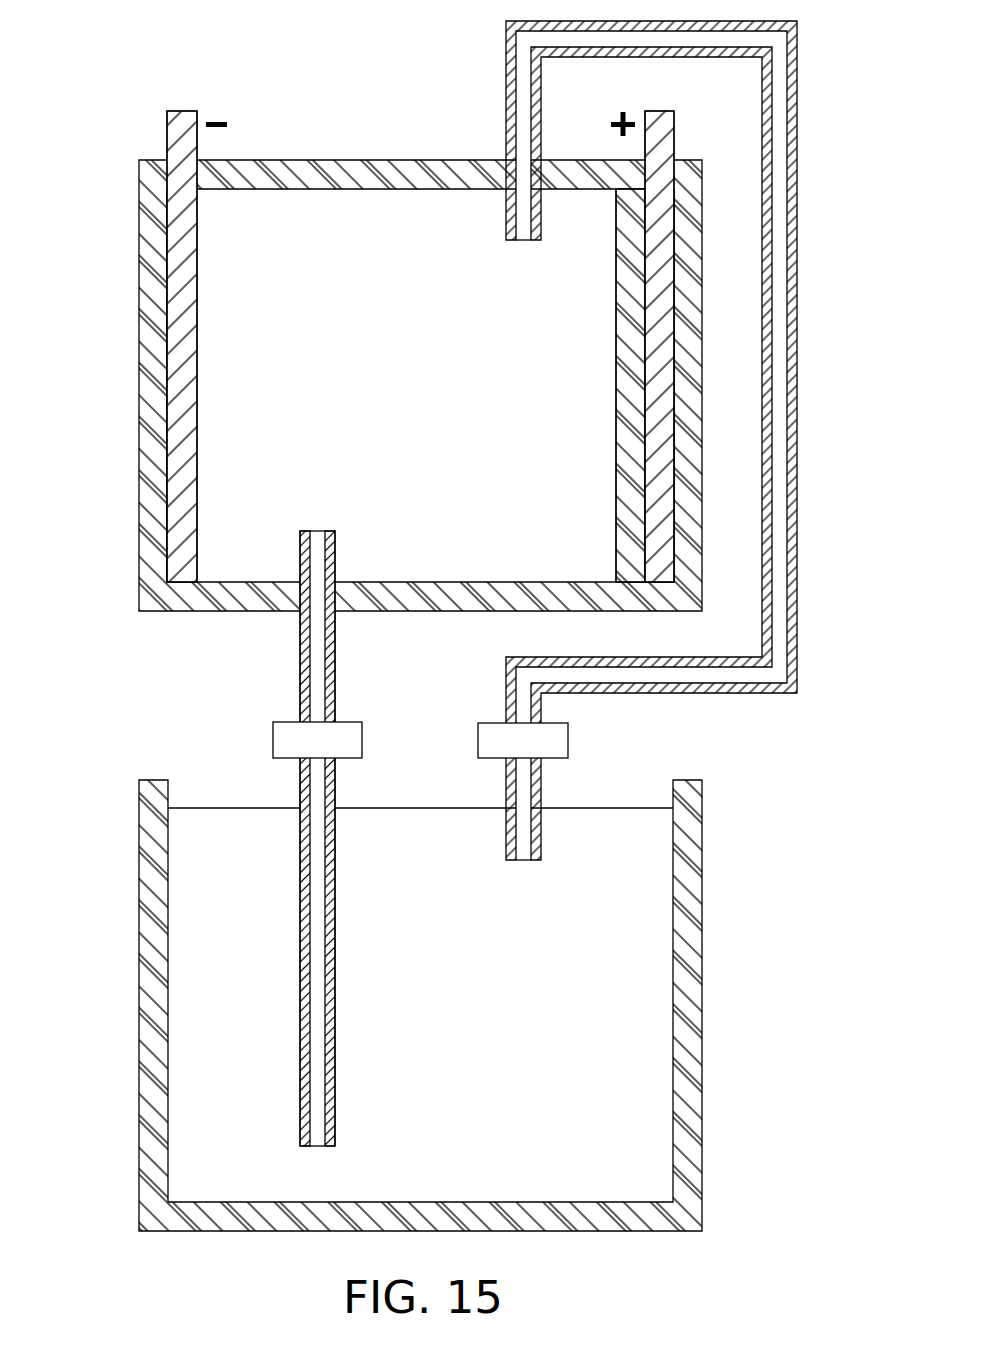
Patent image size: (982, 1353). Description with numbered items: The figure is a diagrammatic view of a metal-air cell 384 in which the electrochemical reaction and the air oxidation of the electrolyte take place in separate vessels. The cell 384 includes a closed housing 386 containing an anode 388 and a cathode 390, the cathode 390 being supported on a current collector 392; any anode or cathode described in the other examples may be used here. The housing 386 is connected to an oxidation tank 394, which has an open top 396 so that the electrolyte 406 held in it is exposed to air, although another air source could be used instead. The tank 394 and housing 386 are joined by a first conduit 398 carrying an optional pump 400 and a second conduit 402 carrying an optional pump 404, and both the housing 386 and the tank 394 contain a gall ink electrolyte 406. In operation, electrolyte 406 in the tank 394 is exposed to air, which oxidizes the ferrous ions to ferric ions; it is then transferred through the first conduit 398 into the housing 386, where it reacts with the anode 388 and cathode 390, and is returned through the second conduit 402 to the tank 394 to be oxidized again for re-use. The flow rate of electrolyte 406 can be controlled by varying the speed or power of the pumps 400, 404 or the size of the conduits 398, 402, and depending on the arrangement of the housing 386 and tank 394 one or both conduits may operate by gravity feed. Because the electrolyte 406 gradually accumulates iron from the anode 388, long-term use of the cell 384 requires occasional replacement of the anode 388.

The metal-air cell 384 is at (374, 324).
The housing 386 is at (150, 308).
The anode 388 is at (180, 272).
The cathode 390 is at (628, 493).
The current collector 392 is at (657, 526).
The oxidation tank 394 is at (702, 1012).
The open top 396 is at (451, 953).
The first conduit 398 is at (337, 656).
The pump 400 is at (362, 738).
The second conduit 402 is at (797, 607).
The pump 404 is at (568, 738).
The electrolyte 406 is at (425, 398).